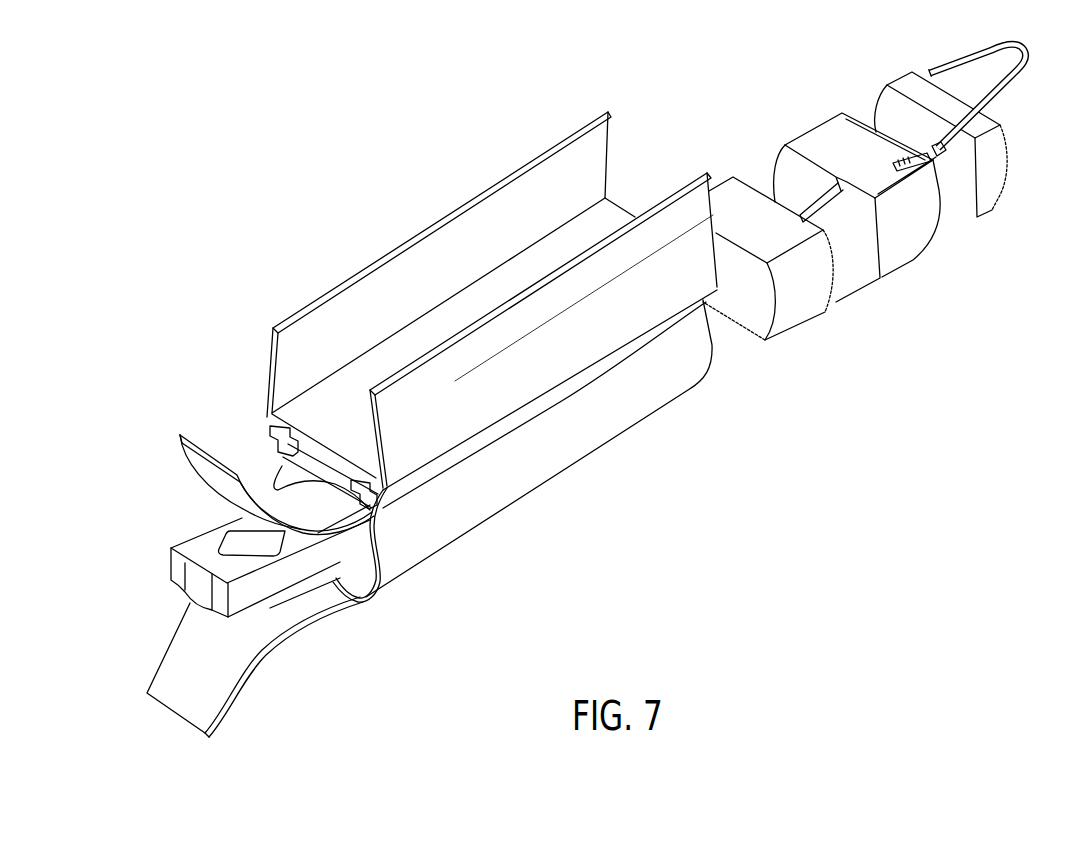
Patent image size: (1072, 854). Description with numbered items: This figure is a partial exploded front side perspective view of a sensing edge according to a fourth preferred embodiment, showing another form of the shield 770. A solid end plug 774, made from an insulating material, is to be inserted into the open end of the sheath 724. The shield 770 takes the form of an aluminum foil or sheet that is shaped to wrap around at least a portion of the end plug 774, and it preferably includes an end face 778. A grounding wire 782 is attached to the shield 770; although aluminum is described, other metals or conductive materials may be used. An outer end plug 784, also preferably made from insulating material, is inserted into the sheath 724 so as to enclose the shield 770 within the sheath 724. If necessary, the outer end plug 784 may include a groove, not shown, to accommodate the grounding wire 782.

The sheath 724 is at (541, 480).
The shield 770 is at (913, 258).
The end plug 774 is at (808, 322).
The end face 778 is at (845, 185).
The grounding wire 782 is at (1022, 84).
The outer end plug 784 is at (993, 208).